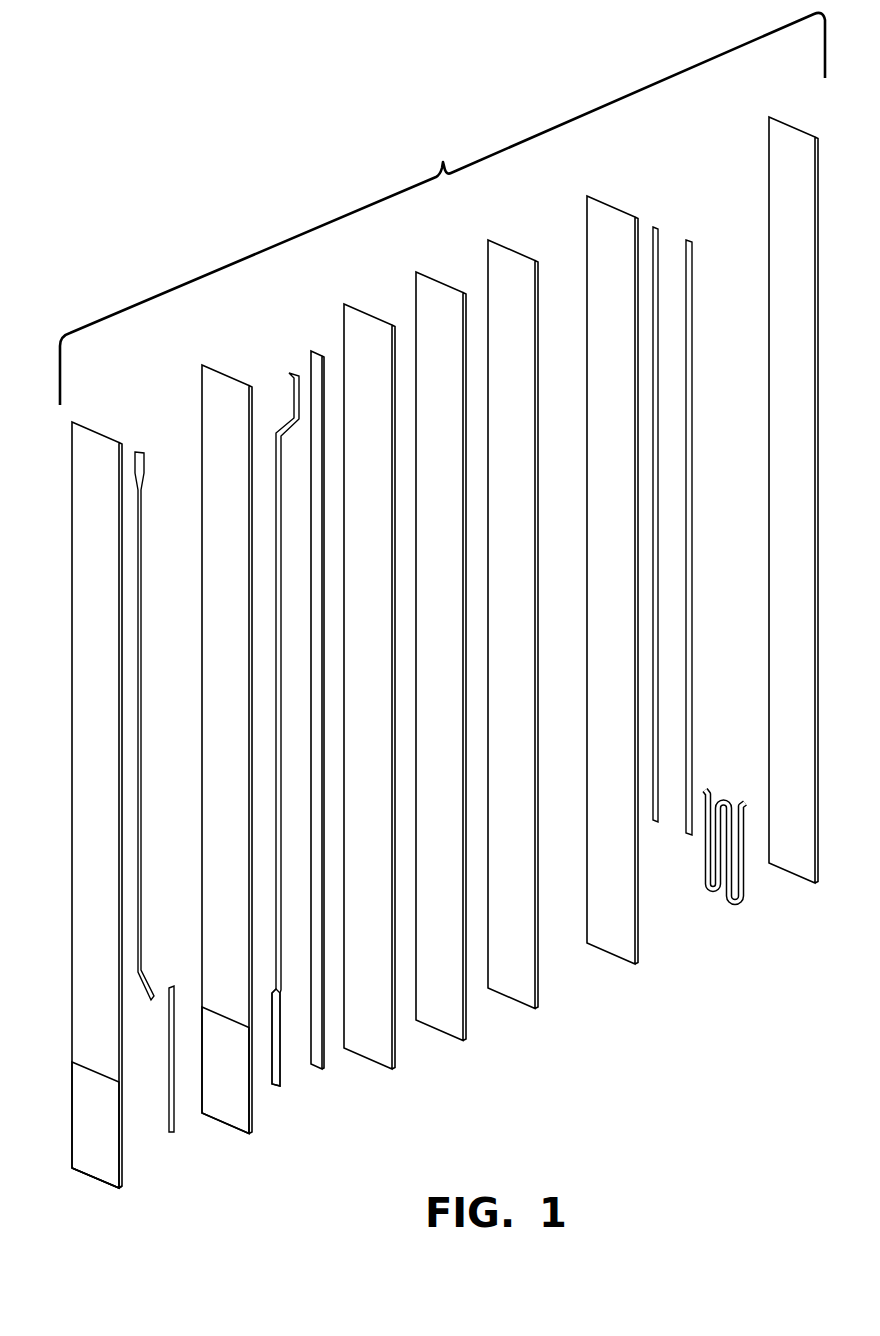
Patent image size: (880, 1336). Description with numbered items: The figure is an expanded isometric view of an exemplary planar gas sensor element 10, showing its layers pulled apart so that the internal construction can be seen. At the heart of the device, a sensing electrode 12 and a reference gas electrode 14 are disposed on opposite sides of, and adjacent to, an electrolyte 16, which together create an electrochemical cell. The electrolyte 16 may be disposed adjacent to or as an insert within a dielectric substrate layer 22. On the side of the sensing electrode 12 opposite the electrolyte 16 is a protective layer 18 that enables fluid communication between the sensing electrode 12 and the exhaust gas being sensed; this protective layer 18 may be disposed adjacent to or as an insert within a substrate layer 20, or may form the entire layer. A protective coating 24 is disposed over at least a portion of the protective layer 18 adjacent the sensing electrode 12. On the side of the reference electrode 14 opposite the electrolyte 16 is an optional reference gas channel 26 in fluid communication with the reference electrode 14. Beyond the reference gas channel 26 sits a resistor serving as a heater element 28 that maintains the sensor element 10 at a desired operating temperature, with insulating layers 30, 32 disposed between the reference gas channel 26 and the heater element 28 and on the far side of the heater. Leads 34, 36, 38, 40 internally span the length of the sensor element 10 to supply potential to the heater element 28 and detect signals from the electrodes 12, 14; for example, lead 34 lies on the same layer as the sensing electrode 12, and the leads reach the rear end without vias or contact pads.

The planar gas sensor element 10 is at (442, 209).
The sensing electrode 12 is at (172, 1135).
The reference gas electrode 14 is at (277, 1090).
The electrolyte 16 is at (227, 1087).
The protective layer 18 is at (104, 1187).
The substrate layer 20 is at (83, 832).
The dielectric substrate layer 22 is at (227, 791).
The protective coating 24 is at (84, 1117).
The reference gas channel 26 is at (315, 351).
The heater element 28 is at (724, 903).
The insulating layer 30 is at (649, 967).
The insulating layer 32 is at (793, 878).
The lead 34 is at (137, 450).
The lead 36 is at (288, 371).
The lead 38 is at (655, 226).
The lead 40 is at (690, 239).